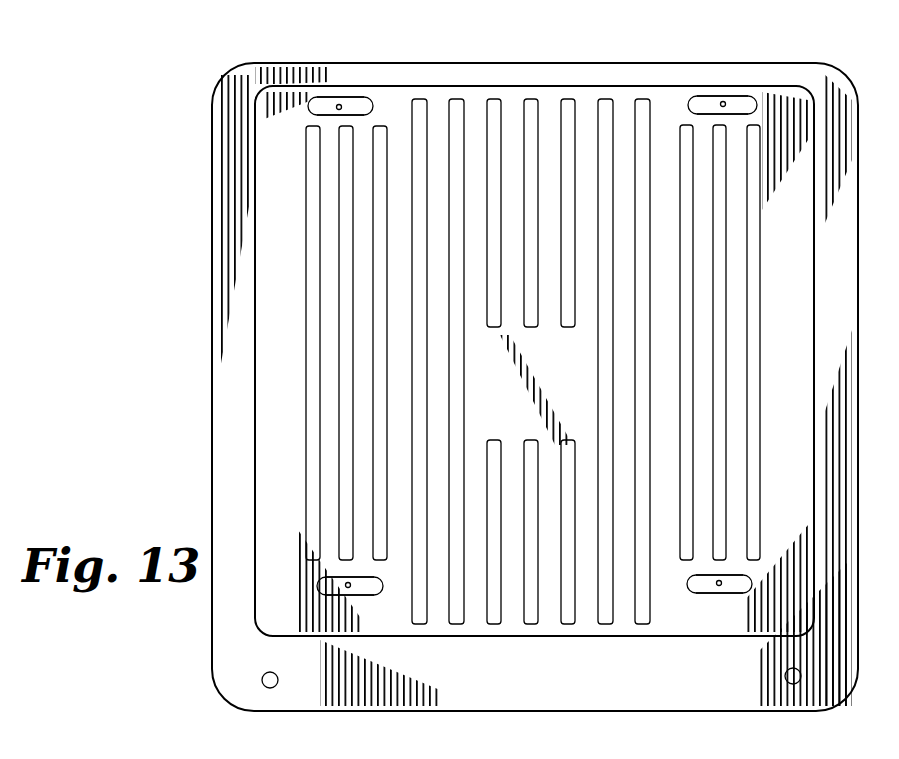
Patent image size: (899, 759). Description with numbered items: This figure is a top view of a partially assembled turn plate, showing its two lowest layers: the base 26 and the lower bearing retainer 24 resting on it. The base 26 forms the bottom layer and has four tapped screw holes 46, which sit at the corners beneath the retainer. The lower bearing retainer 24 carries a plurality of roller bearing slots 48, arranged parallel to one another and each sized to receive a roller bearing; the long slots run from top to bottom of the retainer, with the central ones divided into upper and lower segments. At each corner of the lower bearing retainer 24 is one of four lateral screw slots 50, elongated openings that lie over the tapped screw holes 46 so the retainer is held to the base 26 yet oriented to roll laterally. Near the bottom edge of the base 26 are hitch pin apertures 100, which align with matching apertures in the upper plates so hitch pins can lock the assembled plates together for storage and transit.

The lower bearing retainer 24 is at (256, 438).
The base 26 is at (506, 695).
The tapped screw holes 46 is at (339, 107).
The roller bearing slots 48 is at (467, 616).
The lateral screw slots 50 is at (308, 106).
The hitch pin apertures 100 is at (263, 678).